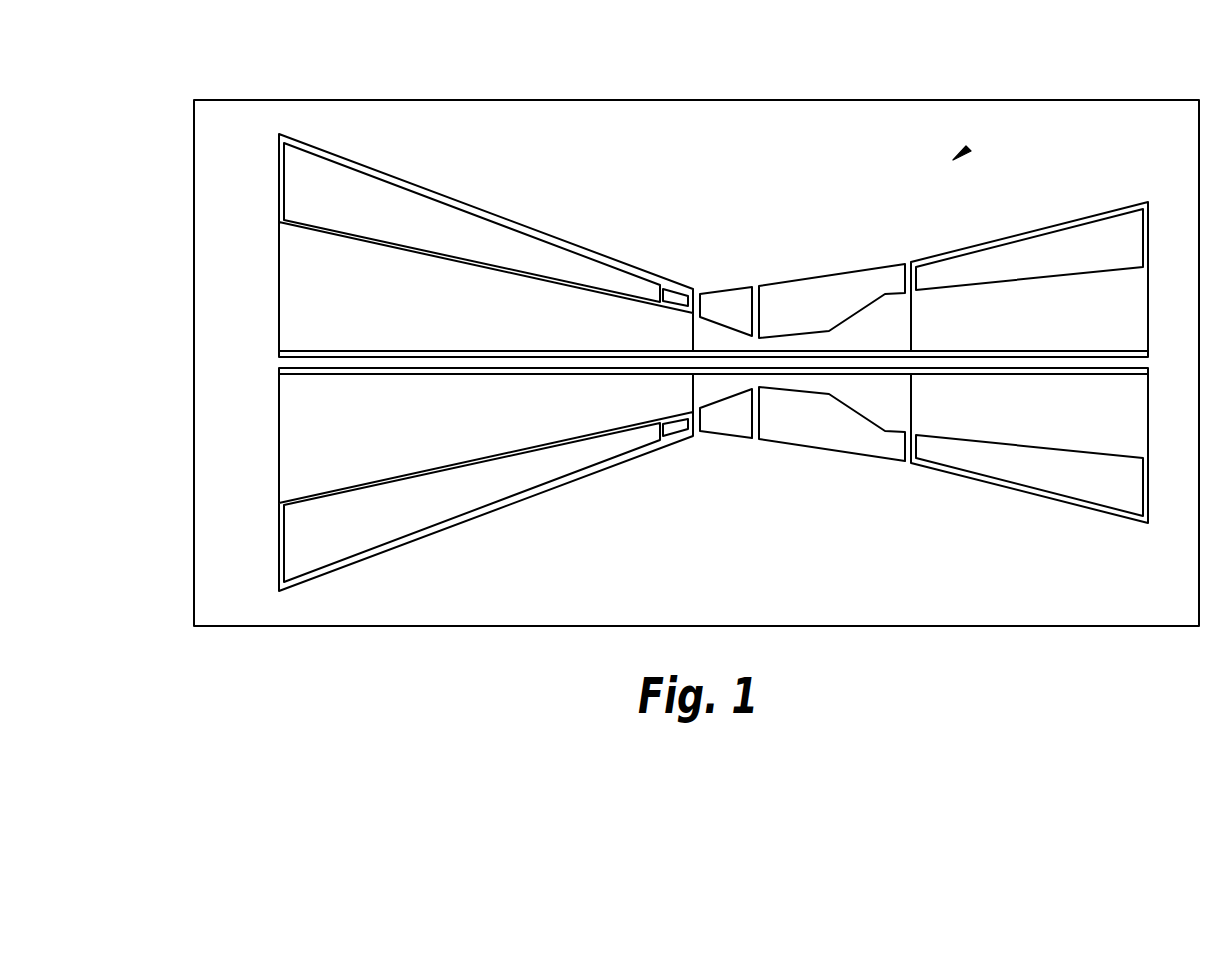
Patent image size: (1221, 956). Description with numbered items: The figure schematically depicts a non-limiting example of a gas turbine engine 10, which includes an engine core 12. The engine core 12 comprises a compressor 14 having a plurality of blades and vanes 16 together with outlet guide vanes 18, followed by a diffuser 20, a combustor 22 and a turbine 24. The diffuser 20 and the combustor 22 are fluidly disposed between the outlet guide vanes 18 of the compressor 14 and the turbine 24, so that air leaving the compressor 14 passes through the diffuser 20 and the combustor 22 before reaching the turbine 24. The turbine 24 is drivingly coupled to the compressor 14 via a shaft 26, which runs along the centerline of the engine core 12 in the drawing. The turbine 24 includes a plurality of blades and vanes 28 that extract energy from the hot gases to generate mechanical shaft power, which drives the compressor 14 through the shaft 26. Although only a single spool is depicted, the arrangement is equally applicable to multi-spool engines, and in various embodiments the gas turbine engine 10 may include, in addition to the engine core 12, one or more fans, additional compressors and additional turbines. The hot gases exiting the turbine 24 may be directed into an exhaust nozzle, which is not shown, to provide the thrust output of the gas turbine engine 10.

The gas turbine engine 10 is at (1105, 100).
The engine core 12 is at (968, 148).
The compressor 14 is at (279, 474).
The blades and vanes 16 is at (393, 533).
The outlet guide vanes 18 is at (672, 432).
The diffuser 20 is at (720, 438).
The combustor 22 is at (805, 277).
The turbine 24 is at (1148, 442).
The shaft 26 is at (708, 349).
The blades and vanes 28 is at (966, 467).